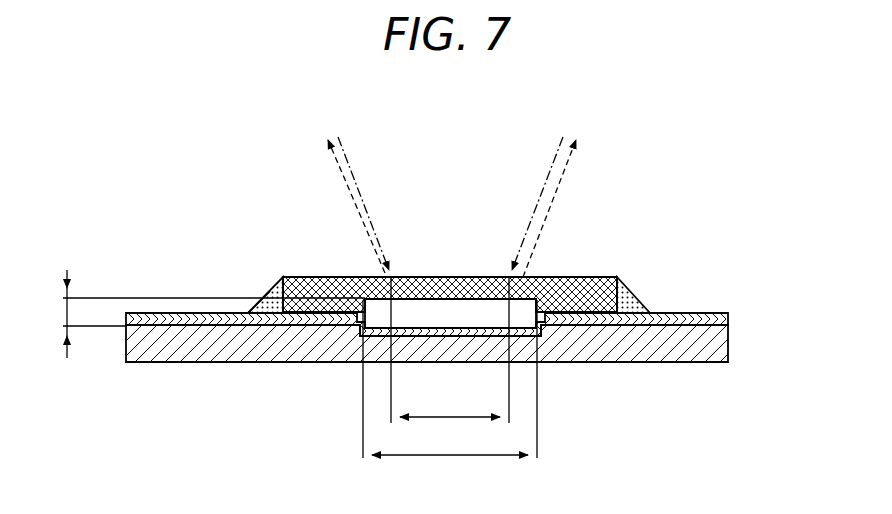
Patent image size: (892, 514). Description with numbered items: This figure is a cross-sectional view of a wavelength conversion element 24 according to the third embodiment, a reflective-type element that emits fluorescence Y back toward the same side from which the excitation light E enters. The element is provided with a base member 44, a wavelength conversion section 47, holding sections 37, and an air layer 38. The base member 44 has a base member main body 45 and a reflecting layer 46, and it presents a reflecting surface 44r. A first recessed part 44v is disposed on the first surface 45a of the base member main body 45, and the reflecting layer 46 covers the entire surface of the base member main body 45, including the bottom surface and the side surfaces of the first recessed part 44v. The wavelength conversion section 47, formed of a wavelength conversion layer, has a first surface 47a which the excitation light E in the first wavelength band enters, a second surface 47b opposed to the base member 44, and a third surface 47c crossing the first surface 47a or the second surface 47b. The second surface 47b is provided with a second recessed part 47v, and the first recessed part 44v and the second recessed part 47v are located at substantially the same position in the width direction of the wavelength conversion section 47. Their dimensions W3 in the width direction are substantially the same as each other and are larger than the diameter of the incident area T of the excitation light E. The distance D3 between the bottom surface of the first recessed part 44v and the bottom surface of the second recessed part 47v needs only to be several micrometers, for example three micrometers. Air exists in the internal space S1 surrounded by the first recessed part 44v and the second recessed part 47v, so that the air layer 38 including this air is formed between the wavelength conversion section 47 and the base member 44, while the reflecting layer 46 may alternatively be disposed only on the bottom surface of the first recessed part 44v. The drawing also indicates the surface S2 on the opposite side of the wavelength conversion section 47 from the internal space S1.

The wavelength conversion element 24 is at (293, 183).
The holding section 37 is at (262, 294).
The air layer 38 is at (403, 305).
The base member 44 is at (484, 319).
The reflecting surface 44r is at (697, 312).
The first recessed part 44v is at (474, 324).
The base member main body 45 is at (728, 348).
The first surface of base member main body 45a is at (713, 313).
The reflecting layer 46 is at (648, 312).
The wavelength conversion section 47 is at (315, 276).
The first surface of wavelength conversion section 47a is at (588, 276).
The second surface of wavelength conversion section 47b is at (325, 316).
The third surface of wavelength conversion section 47c is at (267, 279).
The second recessed part 47v is at (448, 306).
The internal space S1 is at (486, 308).
The second surface S2 is at (197, 153).
The excitation light E is at (530, 217).
The fluorescence Y is at (555, 218).
The distance D3 is at (195, 314).
The incident area T is at (450, 350).
The dimension W3 is at (450, 379).